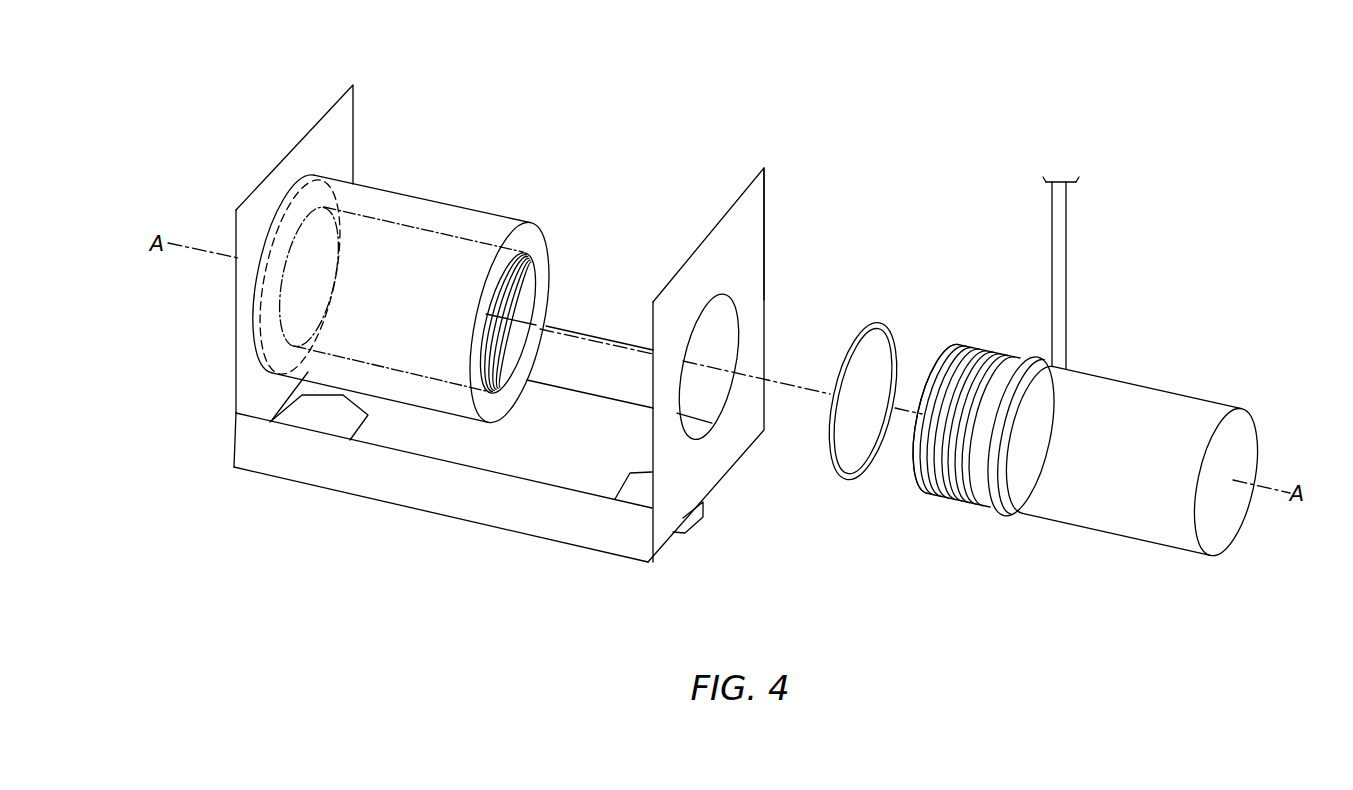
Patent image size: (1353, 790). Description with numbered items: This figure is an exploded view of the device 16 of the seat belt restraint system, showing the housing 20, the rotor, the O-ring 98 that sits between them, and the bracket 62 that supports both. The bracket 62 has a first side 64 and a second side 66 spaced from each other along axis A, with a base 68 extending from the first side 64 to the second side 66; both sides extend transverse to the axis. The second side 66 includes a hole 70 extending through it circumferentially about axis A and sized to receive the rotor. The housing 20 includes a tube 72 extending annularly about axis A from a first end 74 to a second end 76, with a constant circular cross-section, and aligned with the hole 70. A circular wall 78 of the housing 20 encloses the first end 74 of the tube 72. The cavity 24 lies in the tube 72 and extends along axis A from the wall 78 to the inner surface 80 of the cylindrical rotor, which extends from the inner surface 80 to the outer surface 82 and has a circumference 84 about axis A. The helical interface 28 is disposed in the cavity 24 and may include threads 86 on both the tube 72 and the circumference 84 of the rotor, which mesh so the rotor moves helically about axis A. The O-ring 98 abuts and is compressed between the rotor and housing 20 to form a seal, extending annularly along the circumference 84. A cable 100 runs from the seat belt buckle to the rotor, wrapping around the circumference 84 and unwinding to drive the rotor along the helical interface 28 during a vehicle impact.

The device 16 is at (1214, 138).
The housing 20 is at (468, 204).
The cavity 24 is at (387, 250).
The helical interface 28 is at (523, 296).
The bracket 62 is at (766, 168).
The first side 64 is at (313, 127).
The second side 66 is at (765, 235).
The base 68 is at (428, 511).
The hole 70 is at (738, 337).
The tube 72 is at (362, 182).
The first end 74 is at (265, 318).
The second end 76 is at (540, 235).
The wall 78 is at (277, 217).
The inner surface 80 is at (943, 355).
The outer surface 82 is at (1247, 440).
The circumference 84 is at (1127, 384).
The threads 86 is at (528, 275).
The O-ring 98 is at (850, 480).
The cable 100 is at (1068, 248).